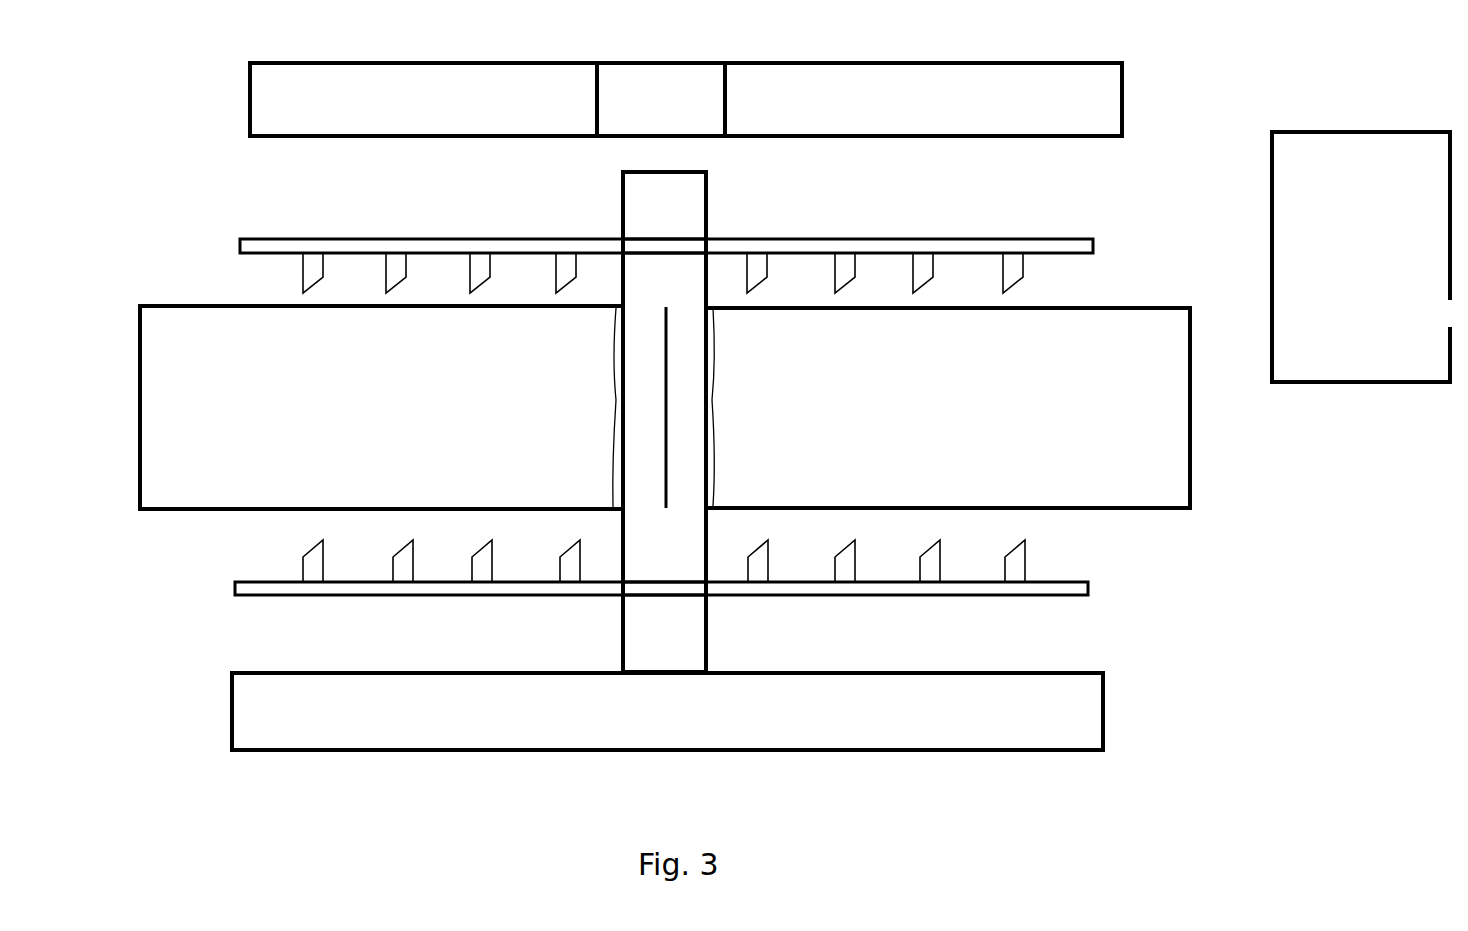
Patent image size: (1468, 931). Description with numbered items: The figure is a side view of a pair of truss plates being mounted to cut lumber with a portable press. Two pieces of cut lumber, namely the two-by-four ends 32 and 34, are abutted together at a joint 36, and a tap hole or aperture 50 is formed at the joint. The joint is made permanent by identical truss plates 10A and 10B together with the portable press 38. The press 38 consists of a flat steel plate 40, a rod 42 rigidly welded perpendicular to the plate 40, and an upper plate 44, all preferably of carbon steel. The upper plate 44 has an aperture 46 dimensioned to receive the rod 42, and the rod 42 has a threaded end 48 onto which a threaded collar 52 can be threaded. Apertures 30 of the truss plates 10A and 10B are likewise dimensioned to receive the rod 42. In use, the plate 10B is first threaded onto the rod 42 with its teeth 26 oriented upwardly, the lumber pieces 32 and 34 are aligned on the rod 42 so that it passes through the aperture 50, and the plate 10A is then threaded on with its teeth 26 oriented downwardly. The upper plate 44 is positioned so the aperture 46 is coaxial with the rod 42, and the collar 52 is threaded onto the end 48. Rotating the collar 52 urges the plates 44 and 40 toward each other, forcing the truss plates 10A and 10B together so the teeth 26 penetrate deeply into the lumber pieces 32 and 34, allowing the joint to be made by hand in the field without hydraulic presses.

The truss plate 10A is at (235, 240).
The truss plate 10B is at (232, 590).
The teeth 26 is at (1023, 277).
The apertures 30 is at (620, 225).
The 2×4 end 32 is at (145, 466).
The 2×4 end 34 is at (1178, 493).
The joint 36 is at (670, 437).
The portable press 38 is at (1108, 700).
The flat steel plate 40 is at (943, 725).
The rod 42 is at (633, 628).
The upper plate 44 is at (830, 88).
The aperture 46 is at (698, 87).
The threaded end 48 is at (696, 199).
The tap hole 50 is at (716, 402).
The threaded collar 52 is at (1308, 383).